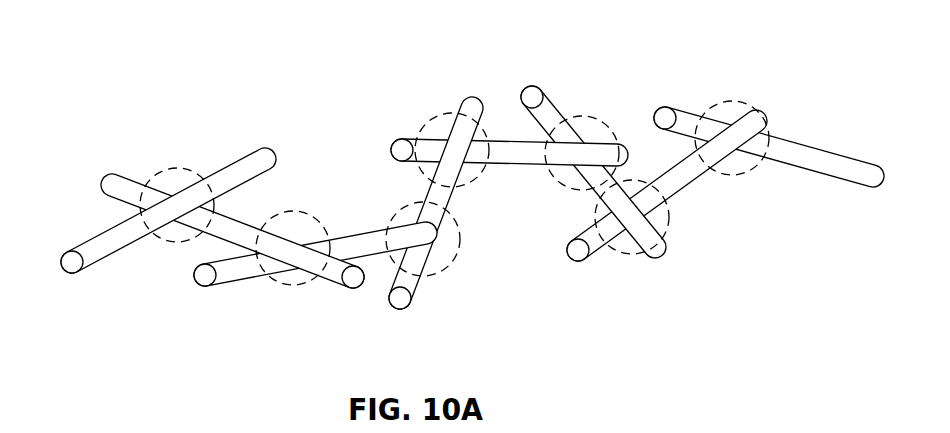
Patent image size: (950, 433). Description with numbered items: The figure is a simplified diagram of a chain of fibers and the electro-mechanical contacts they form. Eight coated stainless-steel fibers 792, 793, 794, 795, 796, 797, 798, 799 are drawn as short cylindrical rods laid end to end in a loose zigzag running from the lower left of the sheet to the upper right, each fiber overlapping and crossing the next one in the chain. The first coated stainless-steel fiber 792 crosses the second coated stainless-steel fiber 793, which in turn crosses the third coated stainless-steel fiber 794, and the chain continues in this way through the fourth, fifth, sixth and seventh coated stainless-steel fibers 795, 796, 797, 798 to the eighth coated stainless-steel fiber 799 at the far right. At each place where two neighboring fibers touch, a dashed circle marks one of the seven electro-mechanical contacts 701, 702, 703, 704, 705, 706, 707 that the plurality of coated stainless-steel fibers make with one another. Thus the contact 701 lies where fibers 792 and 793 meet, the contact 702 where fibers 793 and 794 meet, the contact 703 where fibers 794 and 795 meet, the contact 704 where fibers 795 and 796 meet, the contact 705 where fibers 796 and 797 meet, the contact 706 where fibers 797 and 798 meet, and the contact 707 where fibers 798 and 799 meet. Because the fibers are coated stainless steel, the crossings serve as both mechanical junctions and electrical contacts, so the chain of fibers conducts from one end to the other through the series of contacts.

The electro-mechanical contact 701 is at (168, 243).
The electro-mechanical contact 702 is at (277, 287).
The electro-mechanical contact 703 is at (455, 255).
The electro-mechanical contact 704 is at (447, 113).
The electro-mechanical contact 705 is at (597, 117).
The electro-mechanical contact 706 is at (668, 213).
The electro-mechanical contact 707 is at (735, 101).
The coated stainless-steel fiber 792 is at (85, 238).
The coated stainless-steel fiber 793 is at (338, 270).
The coated stainless-steel fiber 794 is at (340, 230).
The coated stainless-steel fiber 795 is at (418, 197).
The coated stainless-steel fiber 796 is at (510, 140).
The coated stainless-steel fiber 797 is at (547, 100).
The coated stainless-steel fiber 798 is at (752, 120).
The coated stainless-steel fiber 799 is at (817, 148).